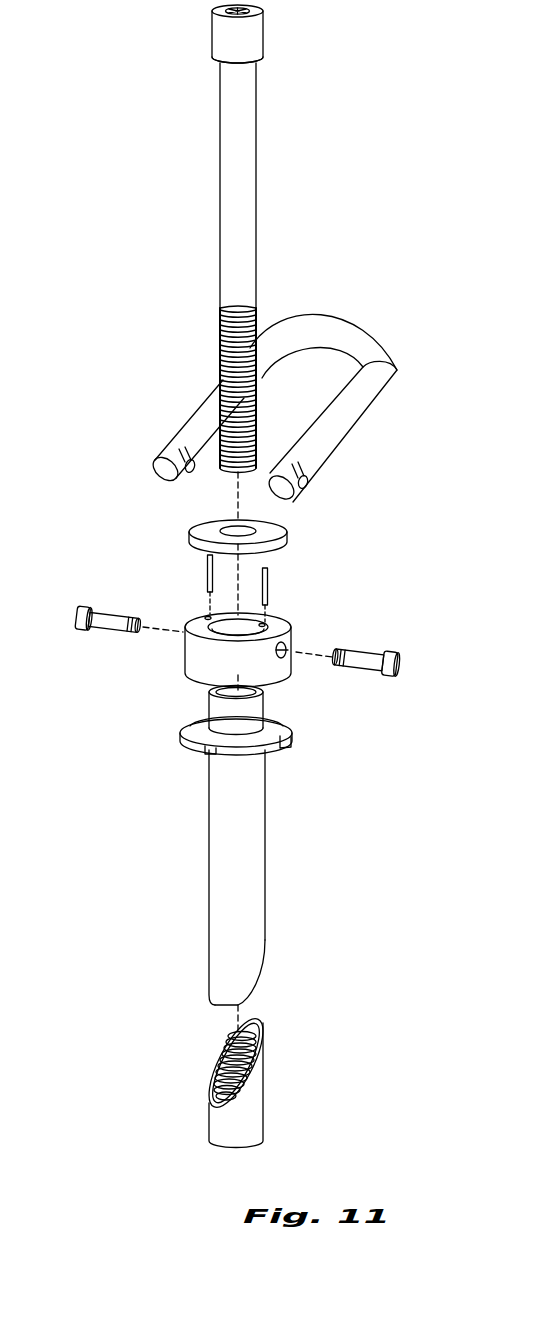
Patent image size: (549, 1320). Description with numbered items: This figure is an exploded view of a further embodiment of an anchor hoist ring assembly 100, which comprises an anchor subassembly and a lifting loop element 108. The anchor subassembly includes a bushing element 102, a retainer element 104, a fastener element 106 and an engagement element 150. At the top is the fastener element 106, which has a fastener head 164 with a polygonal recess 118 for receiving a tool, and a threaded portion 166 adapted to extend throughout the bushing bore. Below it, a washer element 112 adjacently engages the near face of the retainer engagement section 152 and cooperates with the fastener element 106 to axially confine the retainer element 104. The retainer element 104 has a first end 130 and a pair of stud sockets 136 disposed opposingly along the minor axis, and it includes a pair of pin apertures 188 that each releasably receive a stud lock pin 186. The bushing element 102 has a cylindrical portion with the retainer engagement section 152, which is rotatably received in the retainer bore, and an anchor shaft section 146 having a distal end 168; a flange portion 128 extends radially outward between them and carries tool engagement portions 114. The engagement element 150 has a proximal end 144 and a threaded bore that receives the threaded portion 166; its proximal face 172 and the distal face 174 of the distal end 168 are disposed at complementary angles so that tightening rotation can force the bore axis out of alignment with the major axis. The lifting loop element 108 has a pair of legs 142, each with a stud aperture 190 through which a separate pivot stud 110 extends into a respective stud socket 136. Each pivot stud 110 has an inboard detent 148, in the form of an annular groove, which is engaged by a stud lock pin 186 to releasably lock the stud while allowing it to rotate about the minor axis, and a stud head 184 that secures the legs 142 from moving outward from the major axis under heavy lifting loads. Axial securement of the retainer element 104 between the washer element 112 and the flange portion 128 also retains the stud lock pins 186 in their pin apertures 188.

The anchor hoist ring assembly 100 is at (426, 118).
The bushing element 102 is at (251, 915).
The retainer element 104 is at (224, 650).
The fastener element 106 is at (258, 239).
The lifting loop element 108 is at (306, 393).
The pivot stud 110 is at (221, 643).
The washer element 112 is at (288, 531).
The tool engagement portion 114 is at (205, 751).
The polygonal recess 118 is at (228, 13).
The flange portion 128 is at (182, 736).
The first end 130 is at (200, 618).
The stud socket 136 is at (288, 649).
The leg 142 is at (284, 417).
The proximal end 144 is at (240, 1080).
The anchor shaft section 146 is at (212, 871).
The inboard detent 148 is at (140, 642).
The engagement element 150 is at (315, 1105).
The retainer engagement section 152 is at (258, 698).
The fastener head 164 is at (264, 40).
The threaded portion 166 is at (222, 322).
The distal end 168 is at (225, 877).
The proximal face 172 is at (222, 1043).
The distal face 174 is at (258, 977).
The stud head 184 is at (82, 612).
The stud lock pin 186 is at (206, 573).
The pin aperture 188 is at (265, 625).
The stud aperture 190 is at (194, 474).